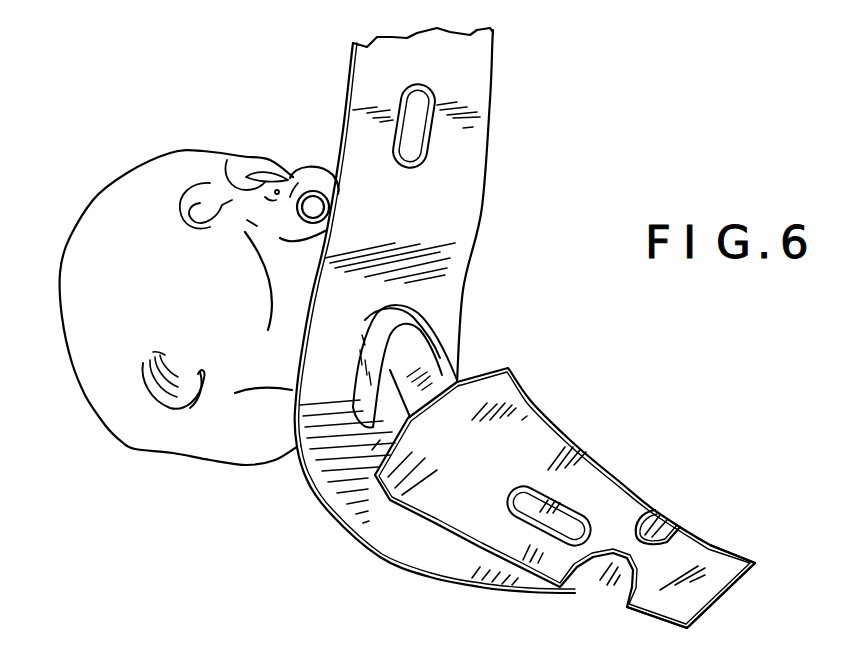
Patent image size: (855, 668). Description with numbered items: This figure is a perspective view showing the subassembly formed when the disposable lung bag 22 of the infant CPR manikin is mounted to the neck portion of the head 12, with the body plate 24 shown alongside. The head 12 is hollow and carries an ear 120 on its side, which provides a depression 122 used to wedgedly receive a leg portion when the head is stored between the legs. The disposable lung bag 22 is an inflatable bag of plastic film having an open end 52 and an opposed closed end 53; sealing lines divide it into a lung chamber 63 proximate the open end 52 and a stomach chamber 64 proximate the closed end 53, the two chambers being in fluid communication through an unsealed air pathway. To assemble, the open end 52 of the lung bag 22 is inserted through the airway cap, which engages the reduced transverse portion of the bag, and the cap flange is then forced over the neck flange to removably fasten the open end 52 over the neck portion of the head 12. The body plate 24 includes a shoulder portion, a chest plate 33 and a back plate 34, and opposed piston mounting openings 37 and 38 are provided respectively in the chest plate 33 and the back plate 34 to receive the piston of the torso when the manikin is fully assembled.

The head 12 is at (133, 152).
The disposable lung bag 22 is at (555, 405).
The body plate 24 is at (495, 208).
The chest plate 33 is at (495, 80).
The back plate 34 is at (403, 567).
The piston mounting opening 37 is at (415, 131).
The piston mounting opening 38 is at (560, 523).
The open end 52 is at (430, 312).
The closed end 53 is at (710, 608).
The lung chamber 63 is at (510, 460).
The stomach chamber 64 is at (708, 572).
The ear 120 is at (180, 410).
The depression 122 is at (143, 375).